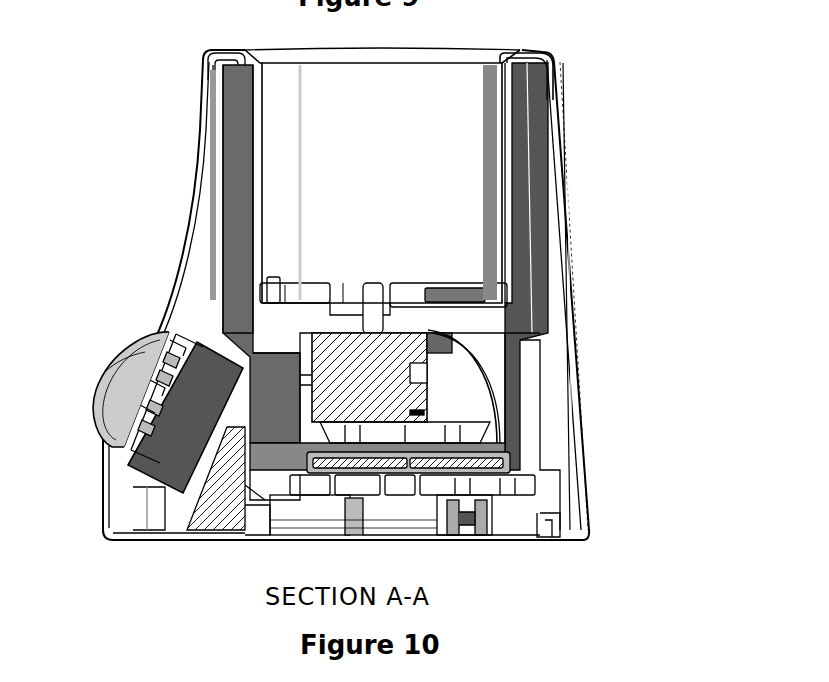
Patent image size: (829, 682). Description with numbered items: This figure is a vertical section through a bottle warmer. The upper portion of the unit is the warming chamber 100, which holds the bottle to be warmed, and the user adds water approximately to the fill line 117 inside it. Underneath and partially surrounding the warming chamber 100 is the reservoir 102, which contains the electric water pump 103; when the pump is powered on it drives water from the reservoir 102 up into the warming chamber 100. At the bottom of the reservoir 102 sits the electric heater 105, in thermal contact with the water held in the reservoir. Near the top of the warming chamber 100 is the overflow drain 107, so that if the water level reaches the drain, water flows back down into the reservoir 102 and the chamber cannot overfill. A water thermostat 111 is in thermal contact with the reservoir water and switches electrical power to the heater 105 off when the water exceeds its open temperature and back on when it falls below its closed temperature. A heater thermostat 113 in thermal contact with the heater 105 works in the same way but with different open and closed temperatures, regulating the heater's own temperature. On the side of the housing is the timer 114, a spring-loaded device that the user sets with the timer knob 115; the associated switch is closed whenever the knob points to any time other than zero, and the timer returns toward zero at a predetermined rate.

The warming chamber 100 is at (468, 155).
The reservoir 102 is at (490, 335).
The electric water pump 103 is at (412, 403).
The electric heater 105 is at (515, 461).
The overflow drain 107 is at (543, 62).
The water thermostat 111 is at (285, 475).
The heater thermostat 113 is at (458, 487).
The timer 114 is at (205, 370).
The timer knob 115 is at (110, 383).
The fill line 117 is at (455, 270).